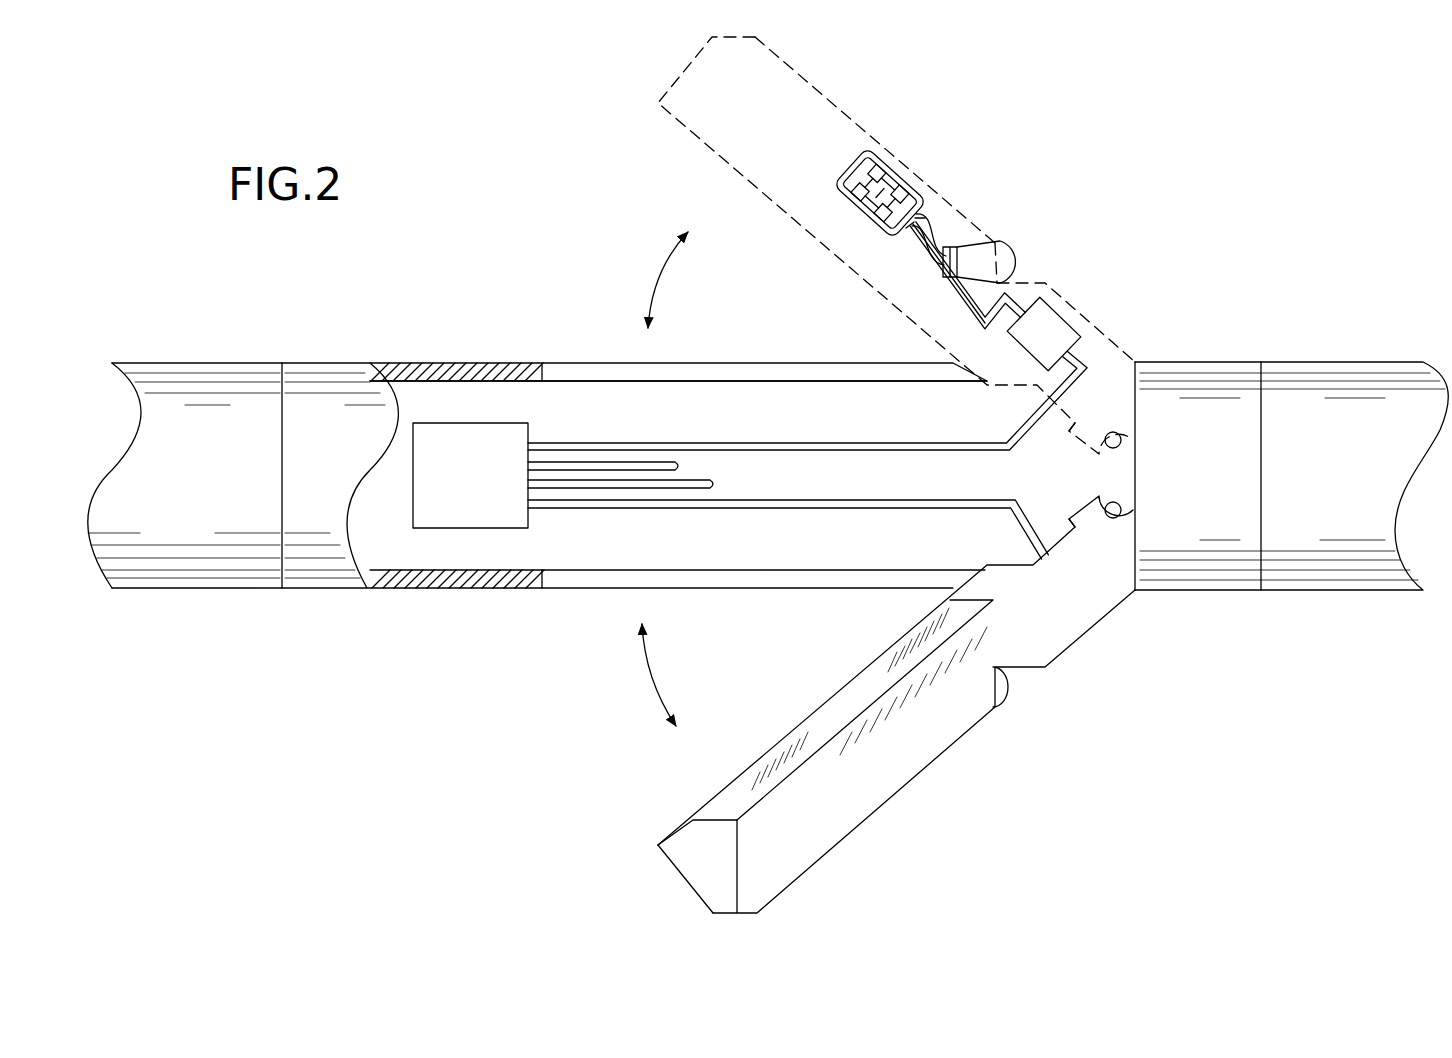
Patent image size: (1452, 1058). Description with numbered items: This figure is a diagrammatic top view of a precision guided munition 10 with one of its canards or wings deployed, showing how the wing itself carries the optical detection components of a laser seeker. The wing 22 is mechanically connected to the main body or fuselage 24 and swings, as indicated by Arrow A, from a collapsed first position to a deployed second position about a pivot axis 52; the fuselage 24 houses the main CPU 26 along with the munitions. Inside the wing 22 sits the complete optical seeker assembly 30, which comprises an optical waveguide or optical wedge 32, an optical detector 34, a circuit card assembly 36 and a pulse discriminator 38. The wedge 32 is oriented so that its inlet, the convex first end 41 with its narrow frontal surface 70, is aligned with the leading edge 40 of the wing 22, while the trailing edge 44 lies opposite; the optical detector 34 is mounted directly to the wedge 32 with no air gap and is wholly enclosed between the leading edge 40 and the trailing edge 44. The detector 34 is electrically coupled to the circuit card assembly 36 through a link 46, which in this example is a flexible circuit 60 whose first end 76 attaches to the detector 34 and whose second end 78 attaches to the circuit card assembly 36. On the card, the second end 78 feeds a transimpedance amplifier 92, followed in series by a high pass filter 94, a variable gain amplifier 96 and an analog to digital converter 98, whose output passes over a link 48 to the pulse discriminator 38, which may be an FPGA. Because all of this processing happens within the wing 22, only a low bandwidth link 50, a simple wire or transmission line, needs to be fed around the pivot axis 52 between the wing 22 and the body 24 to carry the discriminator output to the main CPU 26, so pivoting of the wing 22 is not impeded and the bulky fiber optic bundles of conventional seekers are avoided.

The precision guided munition 10 is at (1205, 152).
The wing 22 is at (710, 155).
The main body 24 is at (333, 358).
The main CPU 26 is at (487, 492).
The optical seeker assembly 30 is at (890, 290).
The optical waveguide 32 is at (1003, 241).
The optical detector 34 is at (997, 246).
The circuit card assembly 36 is at (845, 219).
The pulse discriminator 38 is at (1065, 332).
The leading edge 40 is at (1067, 300).
The first end 41 is at (1055, 467).
The trailing edge 44 is at (685, 128).
The link 46 is at (1005, 195).
The link 48 is at (885, 255).
The low bandwidth link 50 is at (1028, 420).
The pivot axis 52 is at (1121, 439).
The flexible circuit 60 is at (935, 220).
The frontal surface 70 is at (1007, 265).
The first end 76 is at (935, 296).
The second end 78 is at (950, 205).
The transimpedance amplifier 92 is at (905, 183).
The high pass filter 94 is at (880, 236).
The variable gain amplifier 96 is at (837, 168).
The analog to digital converter 98 is at (887, 165).